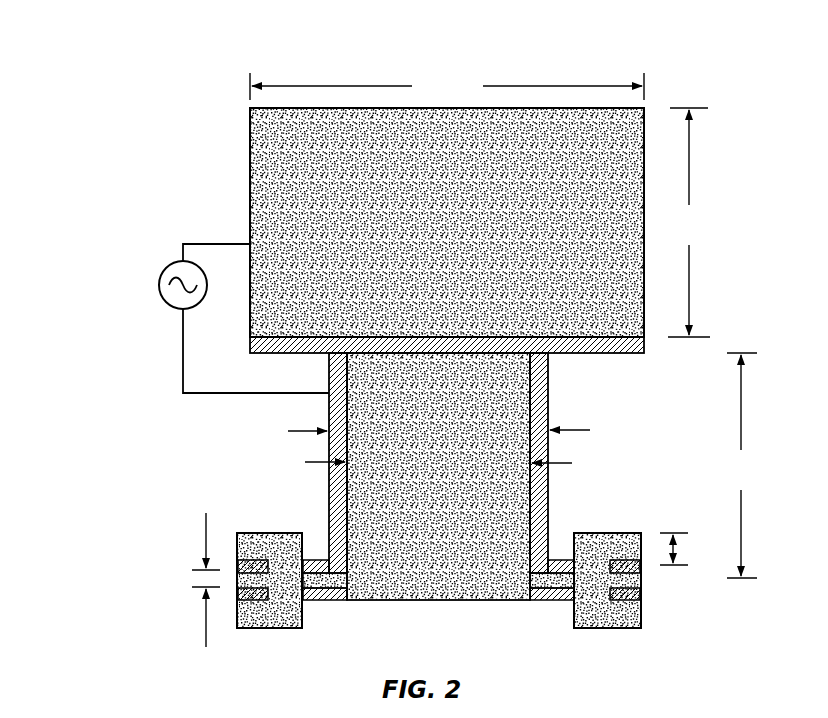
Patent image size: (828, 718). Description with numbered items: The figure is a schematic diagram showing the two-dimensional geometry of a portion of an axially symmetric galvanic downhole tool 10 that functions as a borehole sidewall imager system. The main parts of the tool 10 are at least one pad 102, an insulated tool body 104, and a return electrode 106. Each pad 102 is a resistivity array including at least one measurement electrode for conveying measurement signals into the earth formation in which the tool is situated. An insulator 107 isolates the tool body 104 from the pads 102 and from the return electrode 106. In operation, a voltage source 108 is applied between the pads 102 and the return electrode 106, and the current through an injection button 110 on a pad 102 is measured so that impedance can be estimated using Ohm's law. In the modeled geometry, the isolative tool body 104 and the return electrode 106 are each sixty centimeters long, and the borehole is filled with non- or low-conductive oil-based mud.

The tool 10 is at (238, 50).
The pad 102 is at (280, 532).
The tool body 104 is at (515, 526).
The return electrode 106 is at (250, 138).
The insulator 107 is at (550, 355).
The voltage source 108 is at (176, 265).
The injection button 110 is at (232, 598).